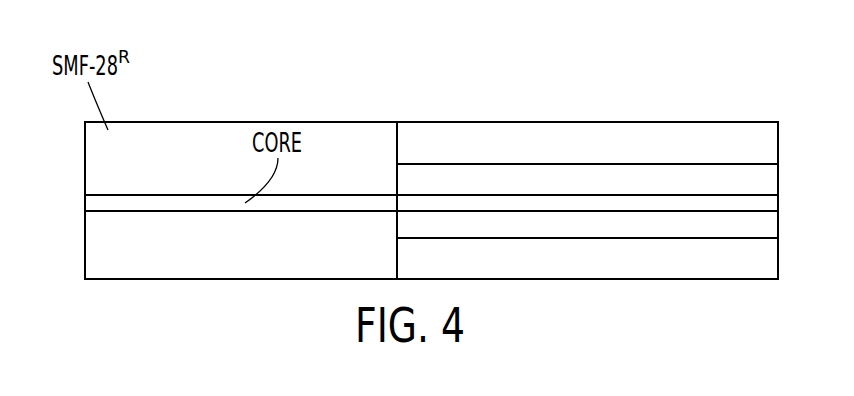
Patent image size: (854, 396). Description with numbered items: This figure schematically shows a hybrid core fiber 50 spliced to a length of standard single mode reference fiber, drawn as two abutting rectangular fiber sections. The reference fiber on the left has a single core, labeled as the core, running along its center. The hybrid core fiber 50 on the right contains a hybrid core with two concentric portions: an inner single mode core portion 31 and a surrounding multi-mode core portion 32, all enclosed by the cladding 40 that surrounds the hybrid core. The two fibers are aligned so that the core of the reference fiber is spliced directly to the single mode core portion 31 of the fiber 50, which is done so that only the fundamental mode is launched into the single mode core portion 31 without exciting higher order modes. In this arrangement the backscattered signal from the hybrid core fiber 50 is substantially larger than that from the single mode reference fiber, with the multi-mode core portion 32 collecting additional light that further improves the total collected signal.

The cladding 40 is at (740, 130).
The hybrid core fiber 50 is at (693, 120).
The single mode core portion 31 is at (518, 203).
The multi-mode core portion 32 is at (573, 178).